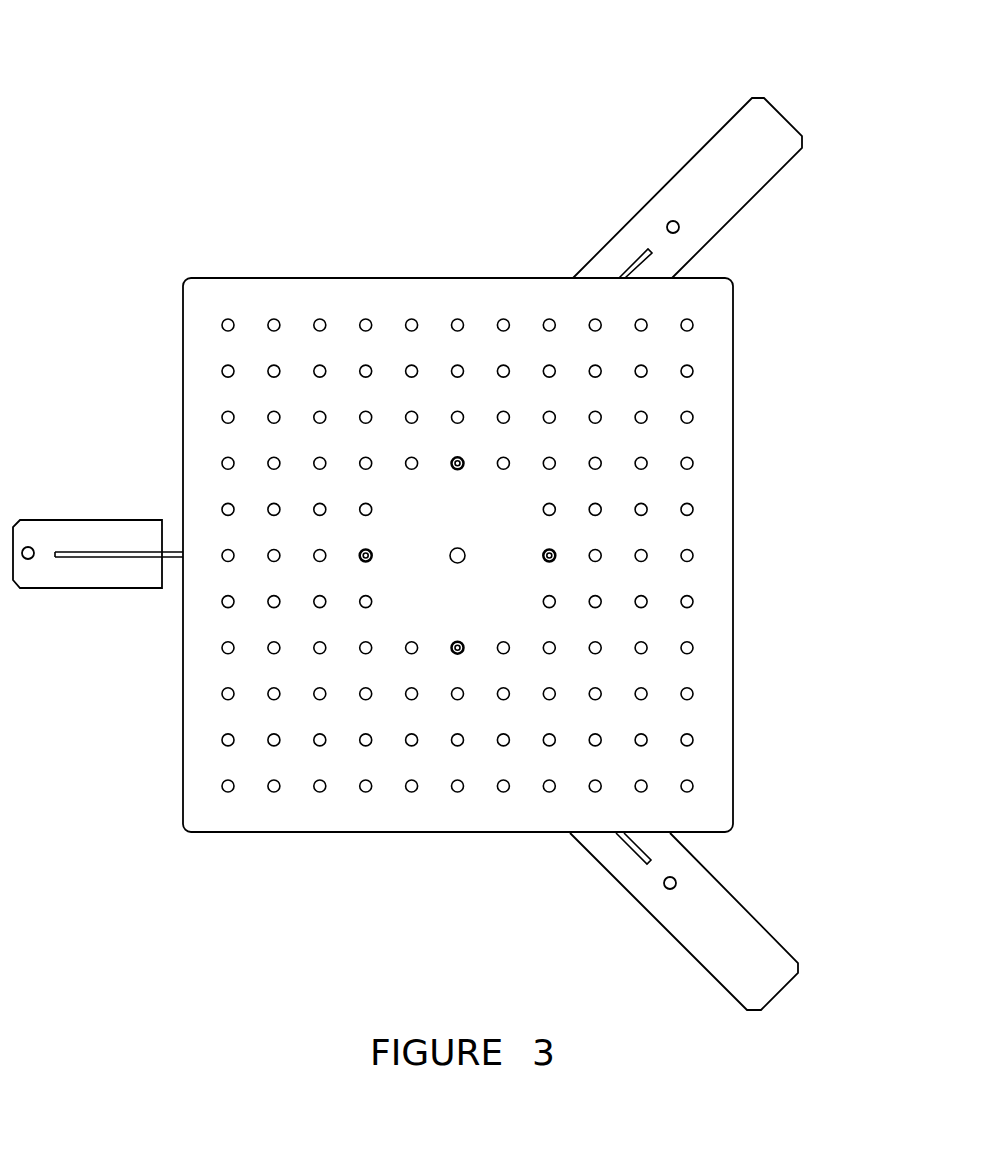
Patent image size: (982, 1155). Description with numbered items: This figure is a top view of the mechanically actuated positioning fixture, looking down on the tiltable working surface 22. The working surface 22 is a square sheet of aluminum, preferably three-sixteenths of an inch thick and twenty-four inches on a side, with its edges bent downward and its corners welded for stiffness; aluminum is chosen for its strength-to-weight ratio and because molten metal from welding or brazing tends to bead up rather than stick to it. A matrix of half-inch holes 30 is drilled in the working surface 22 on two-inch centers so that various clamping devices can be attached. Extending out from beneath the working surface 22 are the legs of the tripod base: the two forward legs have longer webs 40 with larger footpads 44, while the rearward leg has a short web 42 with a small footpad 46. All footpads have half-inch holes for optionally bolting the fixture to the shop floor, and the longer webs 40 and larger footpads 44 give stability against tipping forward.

The tiltable working surface 22 is at (717, 432).
The holes 30 is at (693, 320).
The webs 40 is at (640, 250).
The footpads 44 is at (785, 118).
The footpad 46 is at (62, 518).
The web 42 is at (123, 552).